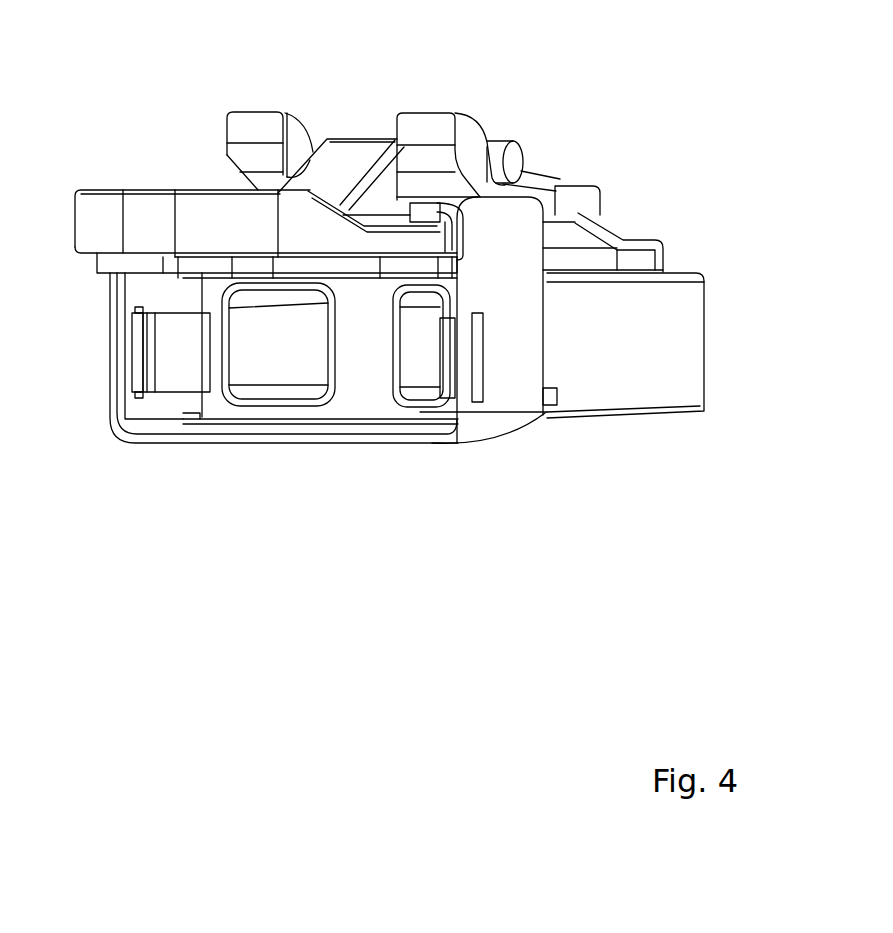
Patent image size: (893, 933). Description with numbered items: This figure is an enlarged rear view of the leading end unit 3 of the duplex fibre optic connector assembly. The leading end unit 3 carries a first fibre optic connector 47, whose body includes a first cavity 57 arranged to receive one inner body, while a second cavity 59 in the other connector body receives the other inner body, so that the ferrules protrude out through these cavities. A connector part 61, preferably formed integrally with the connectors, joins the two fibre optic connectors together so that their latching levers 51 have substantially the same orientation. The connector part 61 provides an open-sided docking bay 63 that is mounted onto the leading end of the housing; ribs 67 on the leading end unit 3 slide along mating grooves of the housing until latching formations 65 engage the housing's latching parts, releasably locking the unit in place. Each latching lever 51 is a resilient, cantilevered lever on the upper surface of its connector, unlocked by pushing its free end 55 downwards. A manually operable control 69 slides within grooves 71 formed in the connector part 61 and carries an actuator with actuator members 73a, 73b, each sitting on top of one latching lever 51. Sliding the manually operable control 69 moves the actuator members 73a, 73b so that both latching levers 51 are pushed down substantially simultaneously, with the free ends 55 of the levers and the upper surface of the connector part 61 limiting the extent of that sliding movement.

The leading end unit 3 is at (596, 451).
The first fibre optic connector 47 is at (668, 348).
The latching lever 51 is at (597, 220).
The free end of the latching lever 55 is at (251, 115).
The first cavity 57 is at (425, 388).
The second cavity 59 is at (289, 387).
The connector part 61 is at (513, 380).
The open-sided docking bay 63 is at (175, 406).
The latching formation 65 is at (136, 354).
The rib 67 is at (177, 348).
The manually operable control 69 is at (188, 208).
The groove 71 is at (429, 226).
The actuator member 73a is at (493, 145).
The actuator member 73b is at (317, 137).